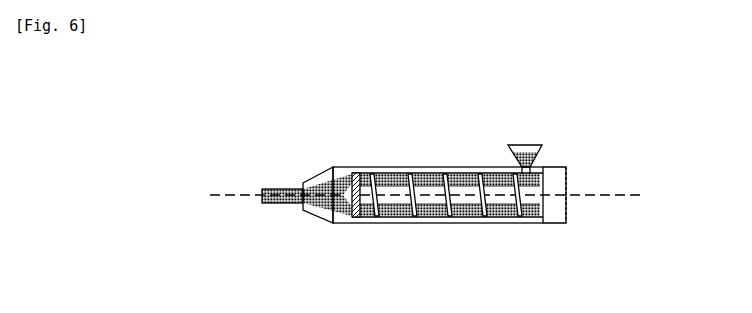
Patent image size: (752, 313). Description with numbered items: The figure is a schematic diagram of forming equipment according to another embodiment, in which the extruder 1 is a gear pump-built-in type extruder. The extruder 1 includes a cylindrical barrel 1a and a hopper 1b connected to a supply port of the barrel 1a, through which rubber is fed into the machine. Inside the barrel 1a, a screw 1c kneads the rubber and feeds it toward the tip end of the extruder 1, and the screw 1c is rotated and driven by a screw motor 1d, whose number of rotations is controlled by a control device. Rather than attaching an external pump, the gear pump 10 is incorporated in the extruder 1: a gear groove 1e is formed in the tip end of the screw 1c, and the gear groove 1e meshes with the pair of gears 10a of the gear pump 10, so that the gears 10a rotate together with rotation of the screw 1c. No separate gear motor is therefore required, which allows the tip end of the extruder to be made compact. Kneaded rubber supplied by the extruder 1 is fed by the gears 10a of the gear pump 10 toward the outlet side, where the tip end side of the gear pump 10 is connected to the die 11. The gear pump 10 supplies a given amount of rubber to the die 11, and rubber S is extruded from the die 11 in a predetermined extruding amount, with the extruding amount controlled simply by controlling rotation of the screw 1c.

The extruder 1 is at (566, 156).
The cylindrical barrel 1a is at (505, 224).
The hopper 1b is at (524, 145).
The screw 1c is at (463, 217).
The screw motor 1d is at (555, 224).
The gear groove 1e is at (372, 218).
The gear pump 10 is at (358, 222).
The pair of gears 10a is at (351, 167).
The die 11 is at (322, 223).
The rubber S is at (286, 204).